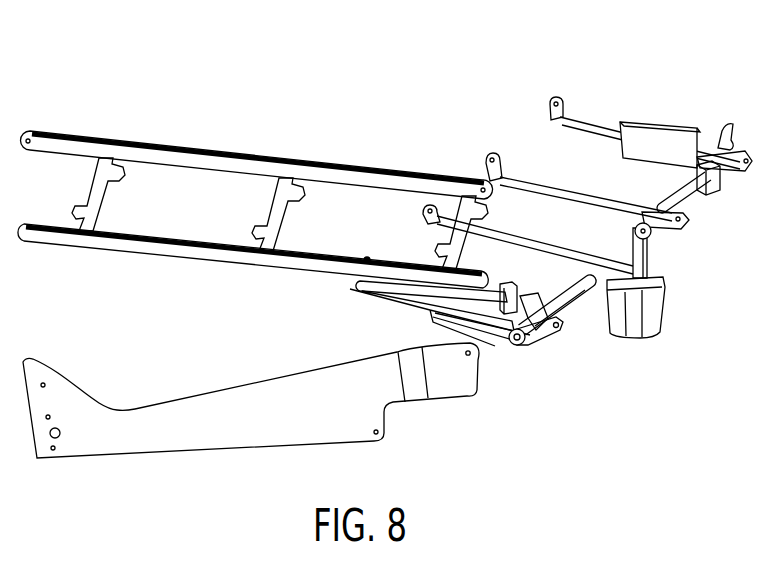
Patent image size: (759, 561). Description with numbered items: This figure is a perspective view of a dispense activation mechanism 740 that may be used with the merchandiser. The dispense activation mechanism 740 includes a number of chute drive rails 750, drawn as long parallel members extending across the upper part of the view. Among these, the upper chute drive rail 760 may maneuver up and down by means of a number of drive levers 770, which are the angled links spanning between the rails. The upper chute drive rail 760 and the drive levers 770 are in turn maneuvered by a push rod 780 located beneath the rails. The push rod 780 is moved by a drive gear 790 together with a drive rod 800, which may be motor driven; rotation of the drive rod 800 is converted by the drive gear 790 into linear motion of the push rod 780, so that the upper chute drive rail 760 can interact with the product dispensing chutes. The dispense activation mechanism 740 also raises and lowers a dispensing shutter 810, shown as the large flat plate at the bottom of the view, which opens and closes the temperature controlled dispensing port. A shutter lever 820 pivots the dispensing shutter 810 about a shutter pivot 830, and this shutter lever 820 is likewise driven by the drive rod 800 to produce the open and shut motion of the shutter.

The dispense activation mechanism 740 is at (100, 105).
The chute drive rails 750 is at (227, 142).
The upper chute drive rail 760 is at (263, 152).
The drive levers 770 is at (284, 217).
The push rod 780 is at (381, 293).
The drive gear 790 is at (547, 343).
The drive rod 800 is at (571, 308).
The dispensing shutter 810 is at (230, 386).
The shutter lever 820 is at (533, 292).
The shutter pivot 830 is at (469, 356).